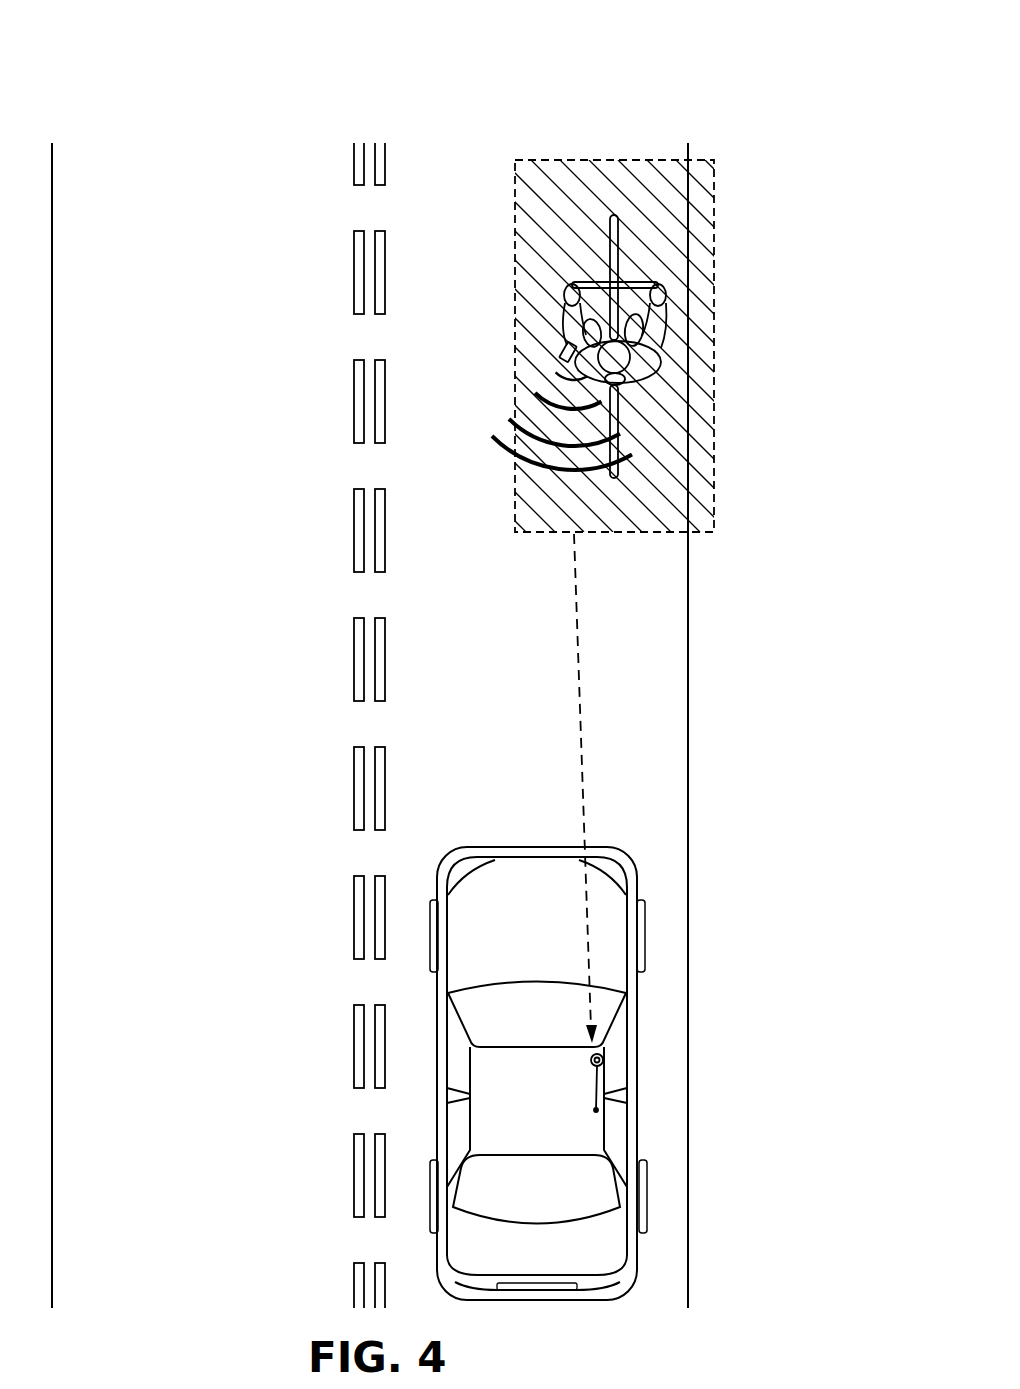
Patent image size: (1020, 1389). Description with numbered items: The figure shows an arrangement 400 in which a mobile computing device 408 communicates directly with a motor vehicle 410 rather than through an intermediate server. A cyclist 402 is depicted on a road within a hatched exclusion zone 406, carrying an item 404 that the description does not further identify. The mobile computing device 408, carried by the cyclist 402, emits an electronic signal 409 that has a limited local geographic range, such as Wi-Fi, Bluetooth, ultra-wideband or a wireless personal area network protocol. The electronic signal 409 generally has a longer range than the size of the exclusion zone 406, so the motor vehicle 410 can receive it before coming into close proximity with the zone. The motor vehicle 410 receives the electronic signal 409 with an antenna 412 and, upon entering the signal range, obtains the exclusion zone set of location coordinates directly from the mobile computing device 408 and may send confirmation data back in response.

The traffic scene 400 is at (665, 72).
The cyclist 402 is at (574, 322).
The object carried by pedestrian 404 is at (606, 232).
The exclusion zone 406 is at (714, 228).
The mobile computing device 408 is at (565, 352).
The electronic signal 409 is at (500, 445).
The motor vehicle 410 is at (485, 848).
The antenna 412 is at (592, 1085).